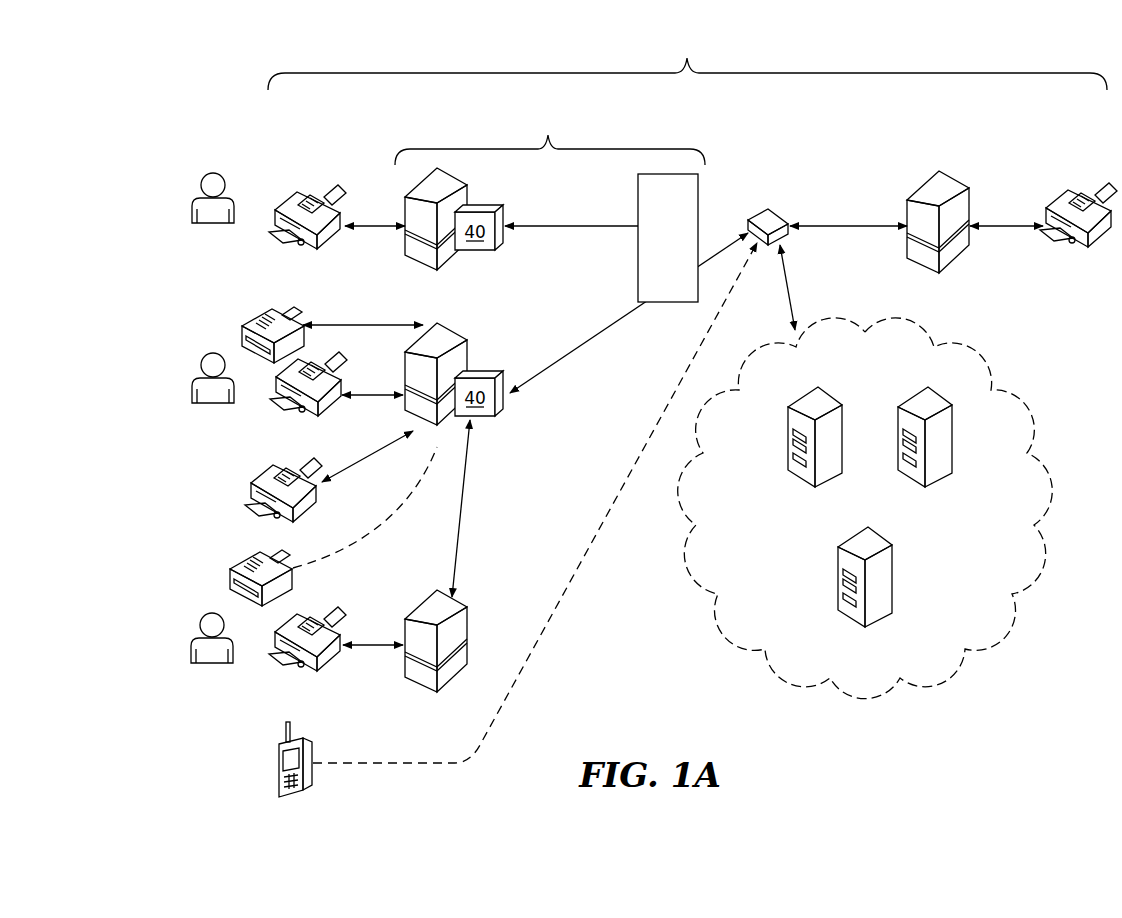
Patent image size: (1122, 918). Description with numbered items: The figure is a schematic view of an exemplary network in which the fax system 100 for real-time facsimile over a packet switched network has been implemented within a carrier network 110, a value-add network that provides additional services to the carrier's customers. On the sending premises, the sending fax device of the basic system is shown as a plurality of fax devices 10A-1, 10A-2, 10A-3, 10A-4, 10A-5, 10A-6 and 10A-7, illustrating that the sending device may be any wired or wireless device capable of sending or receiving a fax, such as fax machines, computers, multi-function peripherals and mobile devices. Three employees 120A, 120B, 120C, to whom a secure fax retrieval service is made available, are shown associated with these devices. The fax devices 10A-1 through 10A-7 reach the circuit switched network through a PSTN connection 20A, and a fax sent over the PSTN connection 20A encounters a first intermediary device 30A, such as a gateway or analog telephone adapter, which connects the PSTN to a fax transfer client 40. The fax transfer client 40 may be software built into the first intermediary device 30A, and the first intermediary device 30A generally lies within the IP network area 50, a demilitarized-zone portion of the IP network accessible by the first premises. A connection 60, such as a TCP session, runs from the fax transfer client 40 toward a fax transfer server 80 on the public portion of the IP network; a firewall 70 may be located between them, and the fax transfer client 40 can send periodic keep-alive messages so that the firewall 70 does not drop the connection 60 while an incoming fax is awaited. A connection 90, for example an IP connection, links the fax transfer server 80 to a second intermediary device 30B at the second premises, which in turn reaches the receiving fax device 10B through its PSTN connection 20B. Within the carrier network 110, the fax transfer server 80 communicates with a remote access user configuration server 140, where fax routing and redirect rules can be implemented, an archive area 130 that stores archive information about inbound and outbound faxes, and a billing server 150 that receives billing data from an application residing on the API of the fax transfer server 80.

The fax system 100 is at (687, 61).
The IP network area 50 is at (550, 137).
The connection 60 is at (580, 222).
The firewall 70 is at (657, 260).
The fax transfer server 80 is at (772, 210).
The connection 90 is at (848, 222).
The PSTN connection 20A is at (372, 224).
The PSTN connection 20B is at (1010, 222).
The fax device 10A-1 is at (330, 232).
The fax device 10A-2 is at (263, 305).
The fax device 10A-3 is at (330, 403).
The fax device 10A-4 is at (273, 472).
The fax device 10A-5 is at (243, 550).
The fax device 10A-6 is at (330, 658).
The fax device 10A-7 is at (277, 753).
The fax device 10B is at (1100, 236).
The first intermediary device 30A is at (456, 256).
The second intermediary device 30B is at (960, 258).
The fax transfer client 40 is at (479, 310).
The carrier network 110 is at (1020, 381).
The employee 120A is at (216, 220).
The employee 120B is at (216, 400).
The employee 120C is at (215, 660).
The archive area 130 is at (886, 616).
The remote access user configuration server 140 is at (835, 473).
The billing server 150 is at (945, 473).